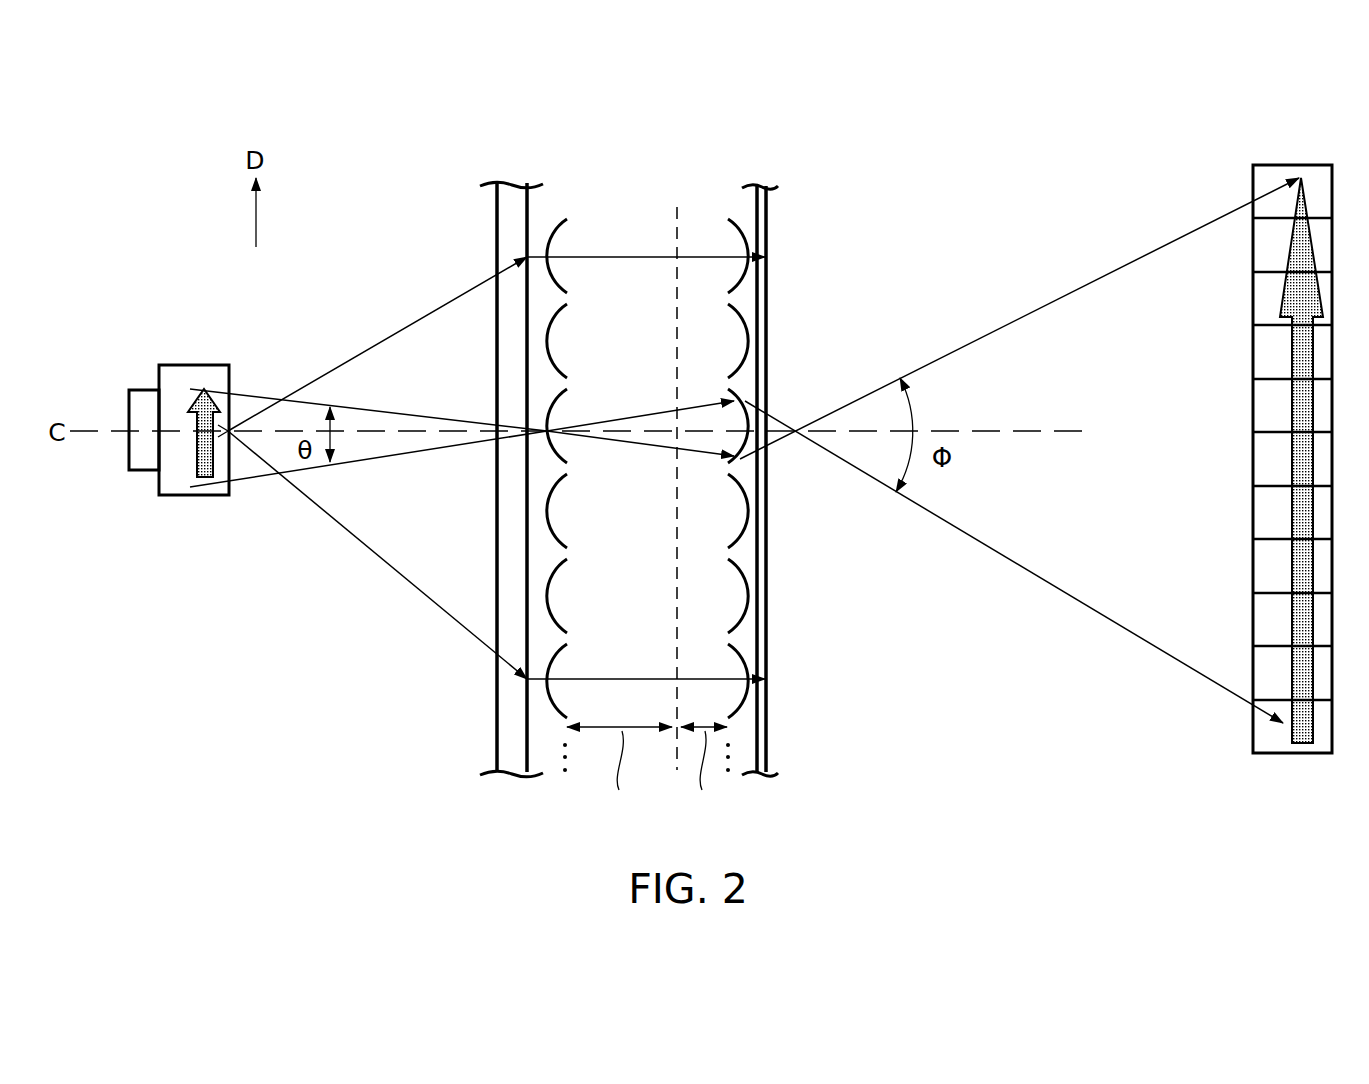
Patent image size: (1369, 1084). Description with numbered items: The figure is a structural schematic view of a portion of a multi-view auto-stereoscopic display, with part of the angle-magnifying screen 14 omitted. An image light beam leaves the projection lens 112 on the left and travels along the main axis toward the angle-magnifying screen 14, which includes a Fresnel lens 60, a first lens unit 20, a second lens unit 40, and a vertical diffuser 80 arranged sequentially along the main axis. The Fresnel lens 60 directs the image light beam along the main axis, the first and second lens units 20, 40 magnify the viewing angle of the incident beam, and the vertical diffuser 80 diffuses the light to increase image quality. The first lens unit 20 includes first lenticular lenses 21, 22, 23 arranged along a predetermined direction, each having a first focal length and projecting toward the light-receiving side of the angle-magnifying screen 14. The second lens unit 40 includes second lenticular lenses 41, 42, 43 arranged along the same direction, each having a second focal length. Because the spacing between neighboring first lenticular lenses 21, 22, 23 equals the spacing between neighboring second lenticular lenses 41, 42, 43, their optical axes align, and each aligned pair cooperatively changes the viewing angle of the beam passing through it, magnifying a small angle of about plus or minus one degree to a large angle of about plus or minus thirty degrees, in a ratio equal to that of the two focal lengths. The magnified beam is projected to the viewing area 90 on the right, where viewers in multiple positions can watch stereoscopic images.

The angle-magnifying screen 14 is at (438, 158).
The projection lens 112 is at (193, 378).
The Fresnel lens 60 is at (512, 190).
The vertical diffuser 80 is at (758, 195).
The first lens unit 20 is at (520, 456).
The second lens unit 40 is at (760, 457).
The first lenticular lens 21 is at (549, 453).
The first lenticular lens 22 is at (547, 347).
The first lenticular lens 23 is at (552, 237).
The second lenticular lens 41 is at (762, 462).
The second lenticular lens 42 is at (748, 347).
The second lenticular lens 43 is at (740, 229).
The viewing area 90 is at (1292, 757).